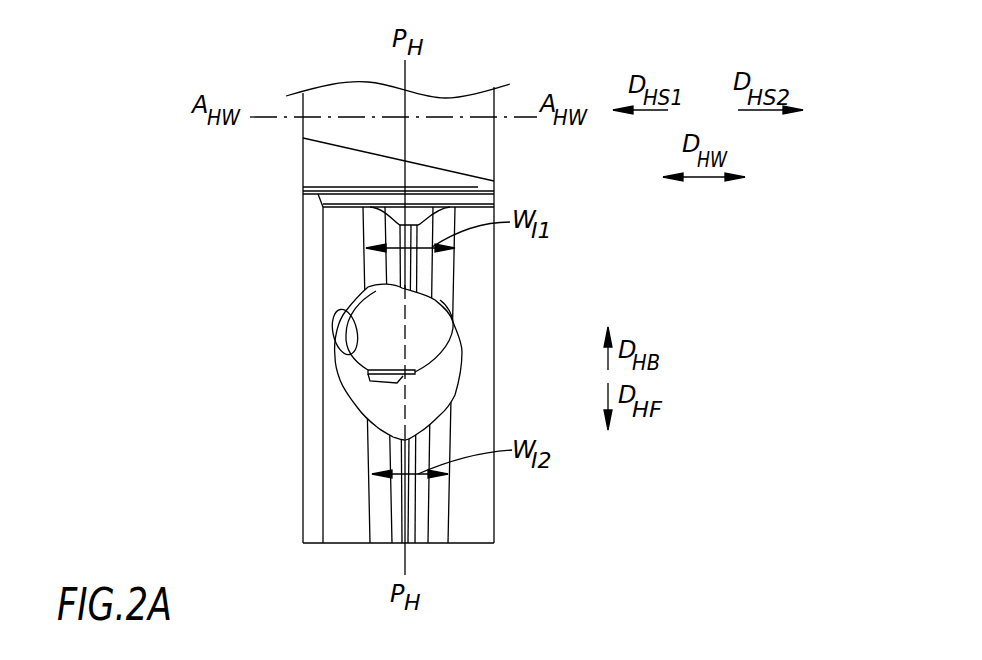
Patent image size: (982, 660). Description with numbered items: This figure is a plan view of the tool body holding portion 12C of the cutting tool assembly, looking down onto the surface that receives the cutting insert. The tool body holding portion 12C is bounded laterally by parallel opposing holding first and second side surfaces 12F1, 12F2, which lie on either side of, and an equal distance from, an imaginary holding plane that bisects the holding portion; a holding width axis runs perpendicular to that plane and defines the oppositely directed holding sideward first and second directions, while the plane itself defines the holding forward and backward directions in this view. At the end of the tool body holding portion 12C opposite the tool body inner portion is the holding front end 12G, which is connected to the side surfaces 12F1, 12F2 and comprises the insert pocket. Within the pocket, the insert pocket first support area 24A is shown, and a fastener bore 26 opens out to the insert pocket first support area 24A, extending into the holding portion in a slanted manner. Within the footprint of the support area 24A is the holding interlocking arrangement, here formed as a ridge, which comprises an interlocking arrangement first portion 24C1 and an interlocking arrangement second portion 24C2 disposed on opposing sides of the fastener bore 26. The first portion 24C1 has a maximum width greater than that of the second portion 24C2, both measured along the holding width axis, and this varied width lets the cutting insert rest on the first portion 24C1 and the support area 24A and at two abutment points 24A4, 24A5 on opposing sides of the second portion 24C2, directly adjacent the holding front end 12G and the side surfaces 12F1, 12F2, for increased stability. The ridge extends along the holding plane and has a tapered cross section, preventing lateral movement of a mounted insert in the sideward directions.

The tool body holding portion 12C is at (530, 54).
The holding first side surface 12F1 is at (283, 132).
The holding second side surface 12F2 is at (515, 153).
The holding front end 12G is at (328, 578).
The insert pocket first support area 24A is at (333, 412).
The abutment point 24A4 is at (333, 522).
The abutment point 24A5 is at (478, 517).
The interlocking arrangement first portion 24C1 is at (343, 248).
The interlocking arrangement second portion 24C2 is at (350, 474).
The fastener bore 26 is at (345, 309).